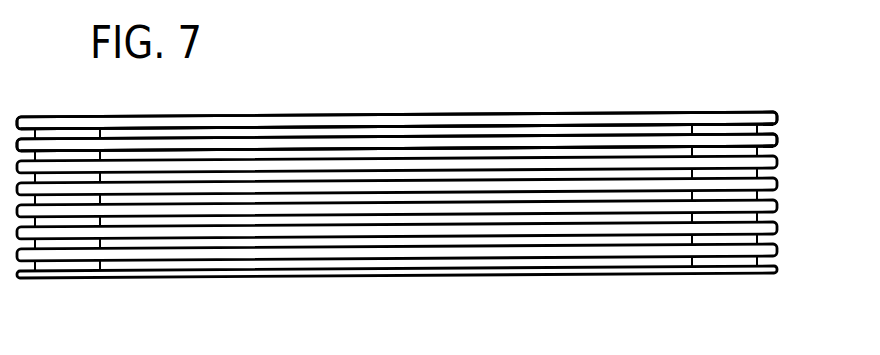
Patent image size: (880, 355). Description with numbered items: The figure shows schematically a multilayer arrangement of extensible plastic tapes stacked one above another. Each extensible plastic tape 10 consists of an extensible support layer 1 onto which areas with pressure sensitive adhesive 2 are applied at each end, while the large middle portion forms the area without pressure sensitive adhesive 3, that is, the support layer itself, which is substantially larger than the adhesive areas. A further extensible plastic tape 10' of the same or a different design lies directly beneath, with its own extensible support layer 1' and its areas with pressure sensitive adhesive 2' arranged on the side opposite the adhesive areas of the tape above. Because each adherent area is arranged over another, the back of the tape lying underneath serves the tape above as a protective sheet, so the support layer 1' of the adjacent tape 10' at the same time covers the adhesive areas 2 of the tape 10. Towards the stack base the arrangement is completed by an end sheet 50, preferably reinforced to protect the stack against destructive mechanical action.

The extensible support layer 1 is at (397, 92).
The extensible support layer of adjacent extensible plastic tape 1' is at (397, 102).
The areas with pressure sensitive adhesive 2 is at (396, 96).
The areas with pressure sensitive adhesive of further extensible plastic tape 2' is at (396, 101).
The area without pressure sensitive adhesive 3 is at (345, 157).
The extensible plastic tape 10 is at (427, 122).
The further extensible plastic tape 10' is at (430, 147).
The end sheet 50 is at (757, 274).